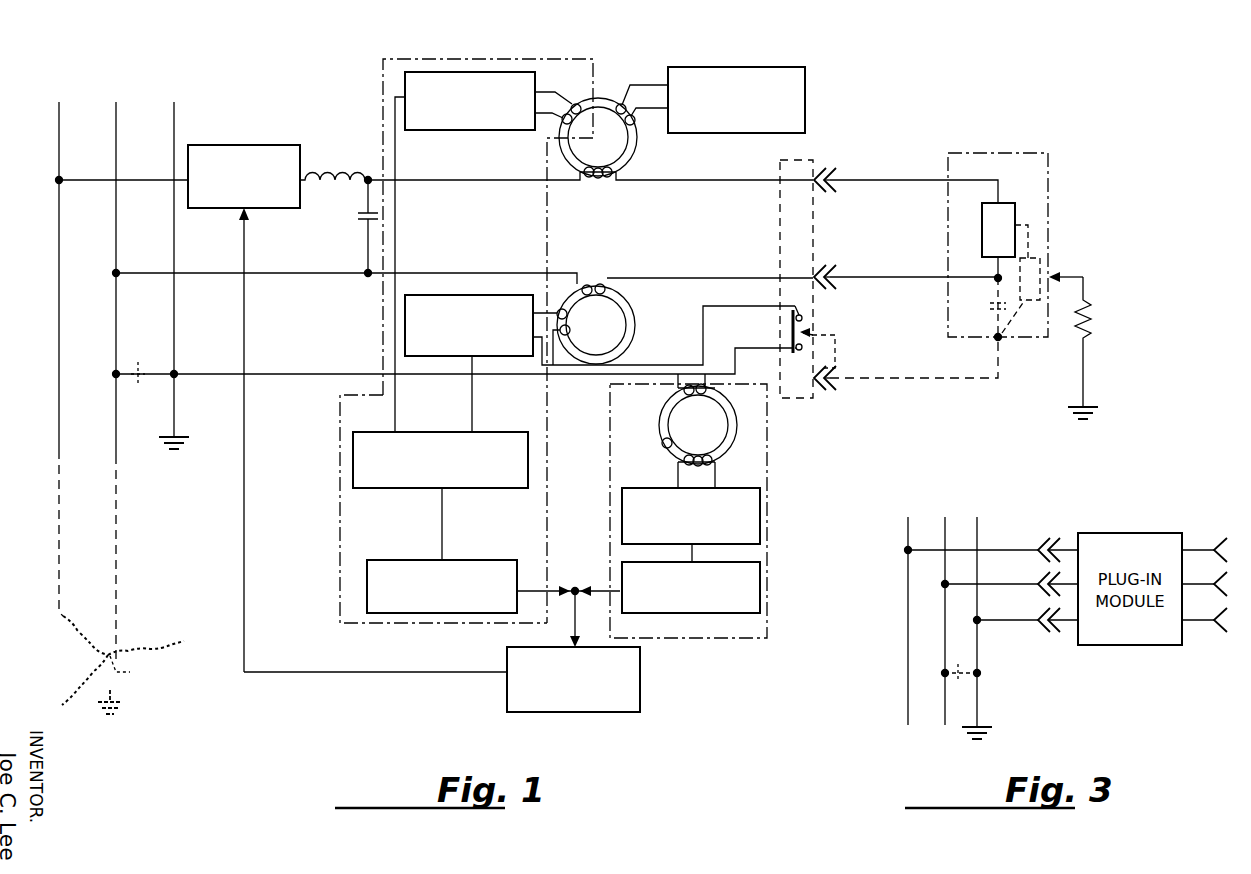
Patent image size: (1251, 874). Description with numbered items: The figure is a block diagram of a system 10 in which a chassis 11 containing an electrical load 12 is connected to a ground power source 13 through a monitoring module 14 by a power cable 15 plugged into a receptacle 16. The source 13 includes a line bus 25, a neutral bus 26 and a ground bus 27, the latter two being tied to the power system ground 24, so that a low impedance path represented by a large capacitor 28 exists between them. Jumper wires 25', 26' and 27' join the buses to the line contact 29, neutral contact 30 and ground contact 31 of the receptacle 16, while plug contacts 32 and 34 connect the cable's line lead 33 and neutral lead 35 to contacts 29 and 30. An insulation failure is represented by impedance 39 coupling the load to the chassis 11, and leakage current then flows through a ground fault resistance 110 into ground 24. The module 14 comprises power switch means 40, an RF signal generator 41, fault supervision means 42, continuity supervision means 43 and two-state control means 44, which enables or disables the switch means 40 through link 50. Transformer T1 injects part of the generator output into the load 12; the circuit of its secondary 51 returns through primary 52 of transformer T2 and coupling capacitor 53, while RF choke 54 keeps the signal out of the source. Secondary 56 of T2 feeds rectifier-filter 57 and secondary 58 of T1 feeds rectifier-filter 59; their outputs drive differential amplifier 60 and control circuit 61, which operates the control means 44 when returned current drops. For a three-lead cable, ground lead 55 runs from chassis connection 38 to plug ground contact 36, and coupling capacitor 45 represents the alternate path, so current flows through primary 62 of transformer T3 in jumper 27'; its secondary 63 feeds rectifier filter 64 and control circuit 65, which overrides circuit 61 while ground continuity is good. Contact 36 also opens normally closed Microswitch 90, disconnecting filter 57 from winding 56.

The system 10 is at (873, 98).
The chassis 11 is at (1008, 152).
The electrical load 12 is at (1005, 213).
The ground power source 13 is at (100, 480).
The monitoring module 14 is at (292, 436).
The power cable 15 is at (889, 162).
The receptacle 16 is at (780, 165).
The power system ground 24 is at (175, 410).
The line bus 25 is at (79, 359).
The jumper wire 25' is at (150, 142).
The neutral bus 26 is at (137, 381).
The jumper wire 26' is at (464, 258).
The ground bus 27 is at (199, 269).
The jumper wire 27' is at (454, 361).
The capacitor 28 is at (142, 366).
The line contact 29 is at (822, 190).
The neutral contact 30 is at (822, 289).
The ground contact 31 is at (822, 390).
The plug contact 32 is at (834, 170).
The line lead 33 is at (905, 180).
The plug contact 34 is at (834, 265).
The neutral lead 35 is at (900, 277).
The ground contact 36 is at (843, 370).
The connection 38 is at (1000, 340).
The impedance 39 is at (1042, 262).
The power switch means 40 is at (288, 157).
The RF signal generator 41 is at (780, 72).
The fault supervision means 42 is at (532, 57).
The continuity supervision means 43 is at (770, 477).
The two-state control means 44 is at (640, 690).
The coupling capacitor 45 is at (990, 306).
The link 50 is at (302, 673).
The secondary of transformer T1 51 is at (603, 177).
The primary of transformer T2 52 is at (592, 284).
The coupling capacitor 53 is at (362, 218).
The RF choke 54 is at (333, 188).
The ground lead 55 is at (940, 377).
The secondary of transformer T2 56 is at (571, 329).
The rectifier-filter 57 is at (415, 345).
The secondary of transformer T1 58 is at (560, 104).
The rectifier-filter 59 is at (513, 120).
The differential amplifier 60 is at (506, 441).
The control circuit 61 is at (487, 565).
The primary of transformer T3 62 is at (704, 450).
The secondary of transformer T3 63 is at (662, 443).
The rectifier filter 64 is at (635, 500).
The control circuit 65 is at (748, 590).
The Microswitch 90 is at (820, 314).
The ground fault 110 is at (1086, 295).
The transformer T1 is at (650, 147).
The transformer T2 is at (652, 321).
The transformer T3 is at (743, 396).